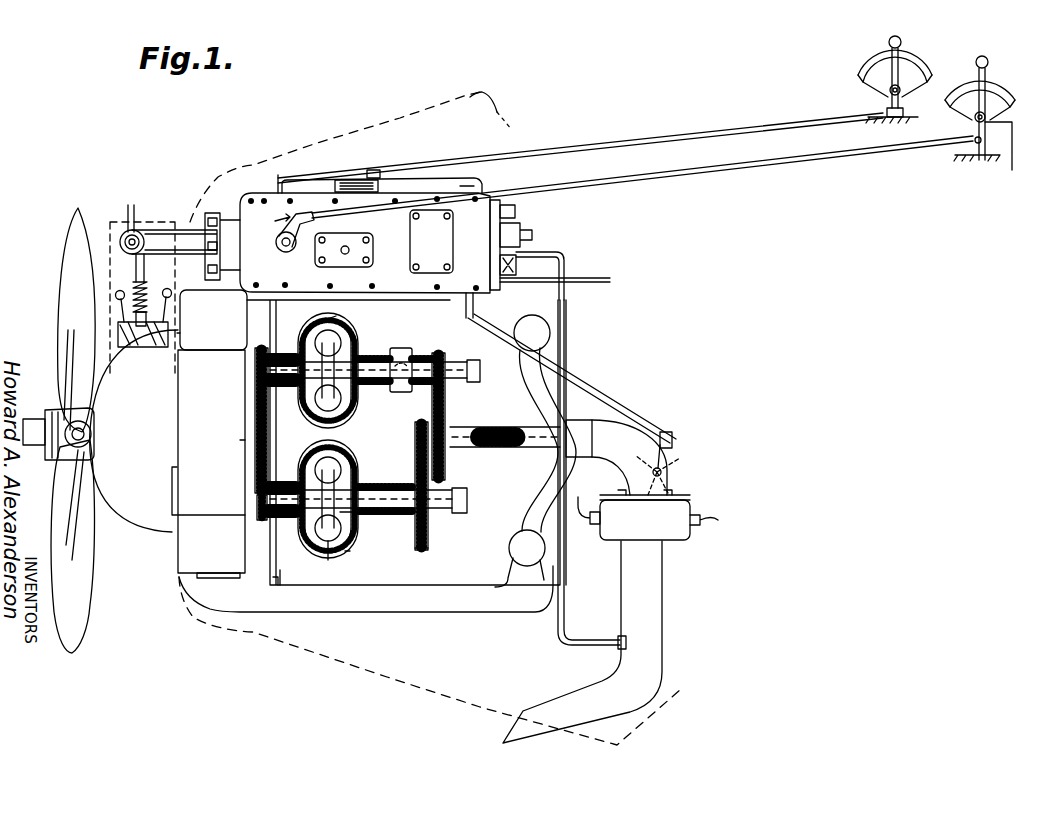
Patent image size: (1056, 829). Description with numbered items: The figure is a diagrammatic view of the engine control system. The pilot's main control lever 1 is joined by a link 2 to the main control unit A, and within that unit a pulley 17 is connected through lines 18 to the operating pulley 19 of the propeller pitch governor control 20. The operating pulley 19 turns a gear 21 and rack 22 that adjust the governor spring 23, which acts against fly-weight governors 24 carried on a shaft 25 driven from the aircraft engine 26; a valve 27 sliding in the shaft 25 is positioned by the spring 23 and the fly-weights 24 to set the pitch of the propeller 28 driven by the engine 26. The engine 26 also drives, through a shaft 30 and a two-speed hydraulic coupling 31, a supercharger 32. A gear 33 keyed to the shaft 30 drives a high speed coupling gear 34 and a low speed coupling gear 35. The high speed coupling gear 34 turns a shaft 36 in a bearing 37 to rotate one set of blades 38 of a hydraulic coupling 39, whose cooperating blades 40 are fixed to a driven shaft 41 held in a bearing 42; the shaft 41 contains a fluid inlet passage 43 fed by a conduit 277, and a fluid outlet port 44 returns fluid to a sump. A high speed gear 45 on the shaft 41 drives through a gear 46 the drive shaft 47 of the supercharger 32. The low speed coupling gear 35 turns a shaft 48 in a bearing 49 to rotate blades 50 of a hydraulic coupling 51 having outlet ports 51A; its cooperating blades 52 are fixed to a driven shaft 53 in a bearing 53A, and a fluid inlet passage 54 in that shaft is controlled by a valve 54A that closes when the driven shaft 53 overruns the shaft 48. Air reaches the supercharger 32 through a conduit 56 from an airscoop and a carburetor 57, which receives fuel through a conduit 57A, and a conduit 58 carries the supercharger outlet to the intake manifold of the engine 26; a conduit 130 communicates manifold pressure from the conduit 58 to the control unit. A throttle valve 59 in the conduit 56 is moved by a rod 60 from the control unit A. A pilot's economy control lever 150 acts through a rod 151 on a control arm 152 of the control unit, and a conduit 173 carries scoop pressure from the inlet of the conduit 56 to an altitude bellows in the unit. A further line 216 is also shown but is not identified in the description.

The main pilot's control lever 1 is at (986, 87).
The link 2 is at (662, 178).
The pulley 17 is at (295, 253).
The lines 18 is at (193, 216).
The operating pulley 19 is at (131, 230).
The propeller pitch governor control 20 is at (147, 286).
The gear 21 is at (113, 222).
The rack 22 is at (168, 242).
The governor spring 23 is at (128, 292).
The fly-weight governors 24 is at (183, 302).
The shaft 25 is at (177, 333).
The aircraft engine 26 is at (222, 438).
The valve 27 is at (148, 348).
The propeller 28 is at (72, 300).
The shaft 30 is at (239, 442).
The two-speed hydraulic coupling 31 is at (372, 527).
The supercharger 32 is at (522, 502).
The gear 33 is at (255, 400).
The high speed coupling gear 34 is at (261, 521).
The low speed coupling gear 35 is at (272, 346).
The shaft 36 is at (290, 532).
The bearing 37 is at (281, 488).
The set of blades 38 is at (317, 441).
The hydraulic coupling 39 is at (346, 552).
The cooperating blades 40 is at (352, 472).
The driven shaft 41 is at (375, 490).
The bearing 42 is at (402, 489).
The fluid inlet passage 43 is at (397, 512).
The fluid outlet port 44 is at (331, 561).
The high speed gear 45 is at (427, 549).
The gear 46 is at (415, 438).
The drive shaft 47 is at (477, 436).
The shaft 48 is at (287, 352).
The bearing 49 is at (284, 386).
The set of blades 50 is at (321, 318).
The hydraulic coupling 51 is at (357, 319).
The fluid outlet ports 51A is at (334, 318).
The cooperating blades 52 is at (350, 344).
The driven shaft 53 is at (372, 383).
The bearing 53A is at (433, 395).
The fluid inlet passage 54 is at (440, 353).
The valve 54A is at (402, 348).
The conduit 56 is at (600, 420).
The carburetor 57 is at (690, 532).
The conduit 57A is at (590, 508).
The conduit 58 is at (437, 613).
The throttle valve 59 is at (665, 470).
The rod 60 is at (584, 388).
The conduit 130 is at (282, 576).
The pilot's economy control lever 150 is at (903, 73).
The rod 151 is at (618, 143).
The control arm 152 is at (278, 178).
The conduit 173 is at (566, 628).
The pipe 216 is at (480, 315).
The conduit 277 is at (436, 350).
The main control unit A is at (481, 183).